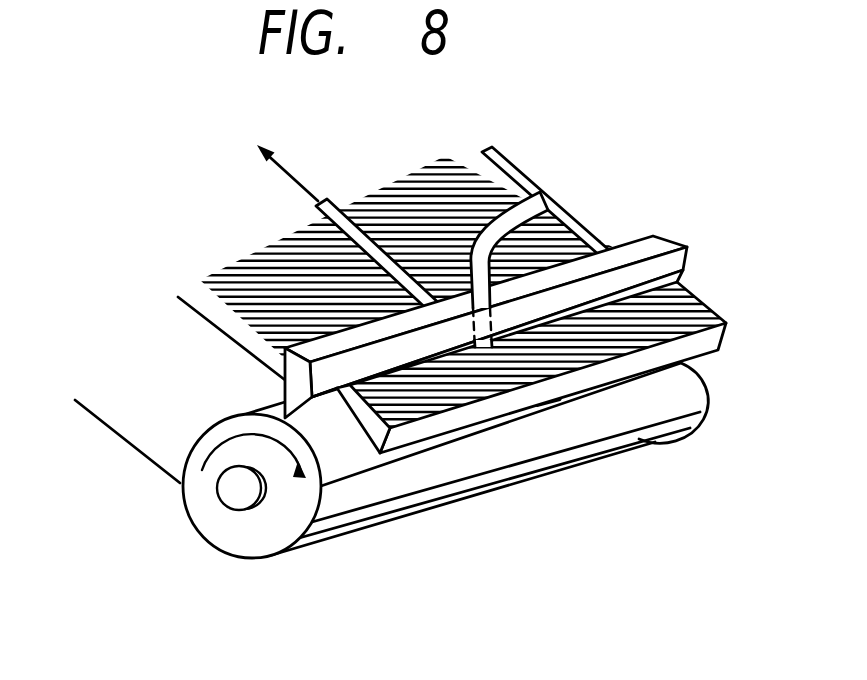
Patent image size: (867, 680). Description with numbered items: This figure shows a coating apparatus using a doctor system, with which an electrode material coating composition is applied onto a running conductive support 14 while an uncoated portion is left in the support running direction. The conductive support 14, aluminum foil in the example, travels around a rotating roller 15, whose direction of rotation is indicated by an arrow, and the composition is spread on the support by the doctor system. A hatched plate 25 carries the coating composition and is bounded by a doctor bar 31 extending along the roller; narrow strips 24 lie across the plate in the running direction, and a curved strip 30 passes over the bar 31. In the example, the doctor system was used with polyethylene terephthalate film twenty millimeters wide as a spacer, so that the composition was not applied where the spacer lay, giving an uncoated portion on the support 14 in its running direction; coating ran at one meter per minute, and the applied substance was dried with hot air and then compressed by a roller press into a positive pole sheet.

The conductive support 14 is at (153, 463).
The roller 15 is at (207, 427).
The strip 24 is at (352, 228).
The plate 25 is at (478, 172).
The belt strip 30 is at (531, 198).
The bar 31 is at (655, 237).